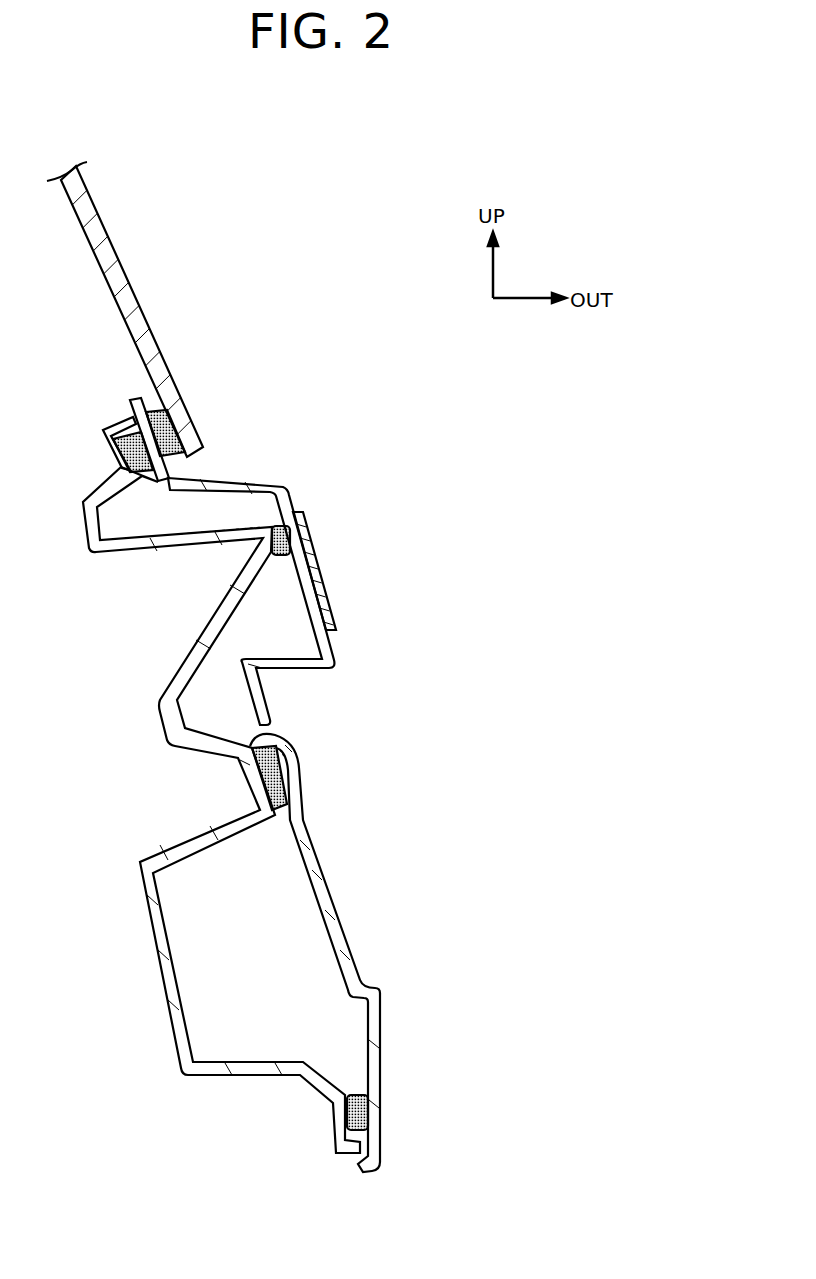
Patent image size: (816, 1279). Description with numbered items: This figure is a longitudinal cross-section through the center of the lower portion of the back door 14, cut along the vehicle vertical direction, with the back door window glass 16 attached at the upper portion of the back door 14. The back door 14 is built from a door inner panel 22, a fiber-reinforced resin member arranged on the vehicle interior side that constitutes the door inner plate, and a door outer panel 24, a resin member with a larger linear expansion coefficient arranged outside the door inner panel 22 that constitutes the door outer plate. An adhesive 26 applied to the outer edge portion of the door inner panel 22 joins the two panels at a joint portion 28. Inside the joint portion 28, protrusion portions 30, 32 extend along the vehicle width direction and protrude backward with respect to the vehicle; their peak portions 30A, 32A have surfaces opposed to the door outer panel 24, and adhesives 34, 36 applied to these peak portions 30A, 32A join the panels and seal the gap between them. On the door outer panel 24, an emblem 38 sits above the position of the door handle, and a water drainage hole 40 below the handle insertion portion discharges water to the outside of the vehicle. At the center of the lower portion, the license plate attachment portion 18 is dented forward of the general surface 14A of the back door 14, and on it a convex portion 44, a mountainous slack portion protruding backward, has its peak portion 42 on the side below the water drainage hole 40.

The back door 14 is at (428, 417).
The general surface of the back door 14A is at (381, 1033).
The back door window glass 16 is at (131, 275).
The license plate attachment portion 18 is at (338, 927).
The door inner panel 22 is at (155, 940).
The door outer panel 24 is at (329, 872).
The adhesive 26 is at (135, 461).
The joint portion 28 is at (347, 1103).
The protrusion portion 30 is at (147, 548).
The peak portion 30A is at (262, 548).
The protrusion portion 32 is at (197, 830).
The peak portion 32A is at (248, 772).
The adhesive 34 is at (281, 556).
The adhesive 36 is at (270, 806).
The emblem 38 is at (316, 566).
The water drainage hole 40 is at (280, 722).
The peak portion 42 is at (298, 770).
The convex portion 44 is at (303, 751).